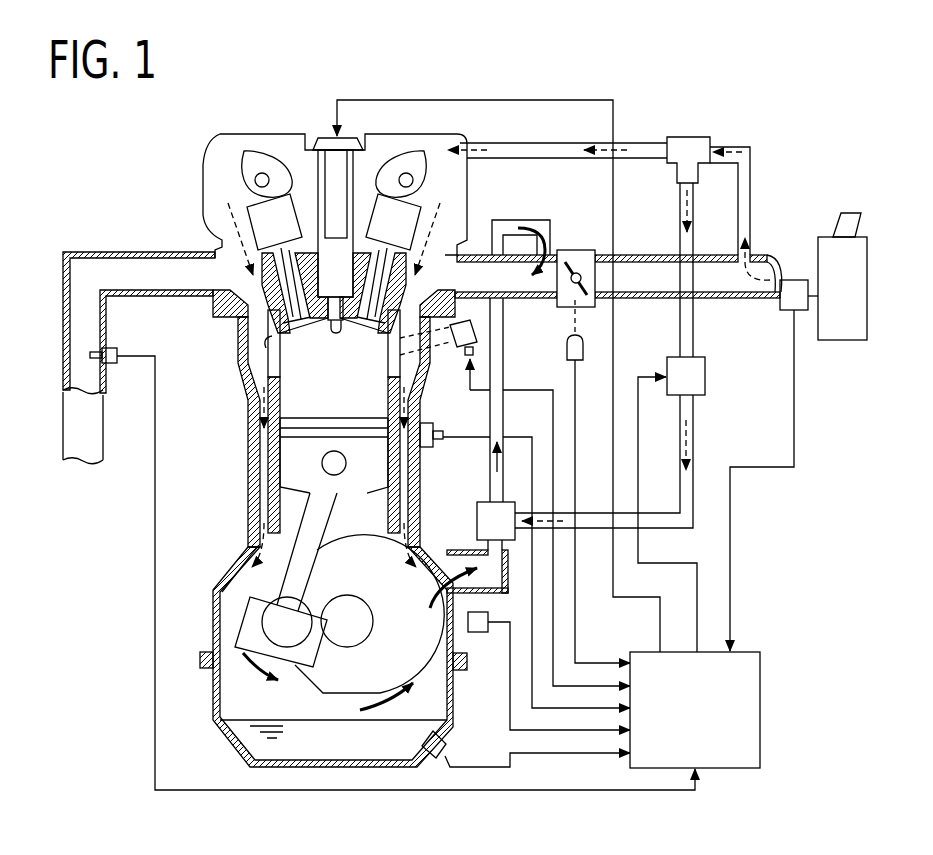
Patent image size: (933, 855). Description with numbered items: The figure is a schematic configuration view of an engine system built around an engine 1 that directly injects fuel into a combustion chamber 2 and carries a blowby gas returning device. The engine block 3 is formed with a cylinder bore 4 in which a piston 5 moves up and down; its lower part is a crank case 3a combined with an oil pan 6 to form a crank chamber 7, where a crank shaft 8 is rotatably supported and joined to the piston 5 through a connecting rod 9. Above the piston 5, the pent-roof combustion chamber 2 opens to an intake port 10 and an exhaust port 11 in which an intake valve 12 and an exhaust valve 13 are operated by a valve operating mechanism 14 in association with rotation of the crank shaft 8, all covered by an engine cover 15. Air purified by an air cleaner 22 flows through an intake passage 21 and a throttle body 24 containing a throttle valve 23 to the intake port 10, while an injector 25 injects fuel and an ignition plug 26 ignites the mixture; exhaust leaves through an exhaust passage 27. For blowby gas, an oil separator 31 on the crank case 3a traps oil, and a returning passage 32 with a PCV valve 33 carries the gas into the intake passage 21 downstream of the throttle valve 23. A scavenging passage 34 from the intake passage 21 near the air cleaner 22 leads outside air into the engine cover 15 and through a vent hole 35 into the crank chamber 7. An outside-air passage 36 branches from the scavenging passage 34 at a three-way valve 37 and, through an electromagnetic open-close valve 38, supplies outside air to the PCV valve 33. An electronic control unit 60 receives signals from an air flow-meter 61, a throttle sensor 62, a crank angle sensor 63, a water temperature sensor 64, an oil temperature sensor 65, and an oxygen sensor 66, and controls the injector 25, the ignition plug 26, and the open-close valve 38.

The engine 1 is at (166, 164).
The combustion chamber 2 is at (323, 396).
The engine block 3 is at (248, 455).
The crank case 3a is at (215, 640).
The cylinder bore 4 is at (250, 385).
The piston 5 is at (290, 475).
The oil pan 6 is at (222, 737).
The crank chamber 7 is at (240, 702).
The crank shaft 8 is at (368, 630).
The connecting rod 9 is at (222, 590).
The intake port 10 is at (458, 258).
The exhaust port 11 is at (208, 256).
The intake valve 12 is at (414, 382).
The exhaust valve 13 is at (266, 348).
The valve operating mechanism 14 is at (262, 152).
The engine cover 15 is at (230, 133).
The intake passage 21 is at (637, 254).
The air cleaner 22 is at (868, 255).
The throttle valve 23 is at (574, 258).
The throttle body 24 is at (562, 305).
The injector 25 is at (452, 350).
The ignition plug 26 is at (330, 137).
The exhaust passage 27 is at (125, 251).
The oil separator 31 is at (443, 549).
The returning passage 32 is at (504, 414).
The PCV valve 33 is at (480, 510).
The scavenging passage 34 is at (636, 143).
The vent hole 35 is at (260, 432).
The outside-air passage 36 is at (670, 528).
The three-way valve 37 is at (692, 138).
The electromagnetic open-close valve 38 is at (706, 378).
The electronic control unit 60 is at (762, 675).
The air flow-meter 61 is at (785, 310).
The throttle sensor 62 is at (566, 348).
The crank angle sensor 63 is at (478, 632).
The water temperature sensor 64 is at (440, 430).
The oil temperature sensor 65 is at (448, 745).
The oxygen sensor 66 is at (117, 352).